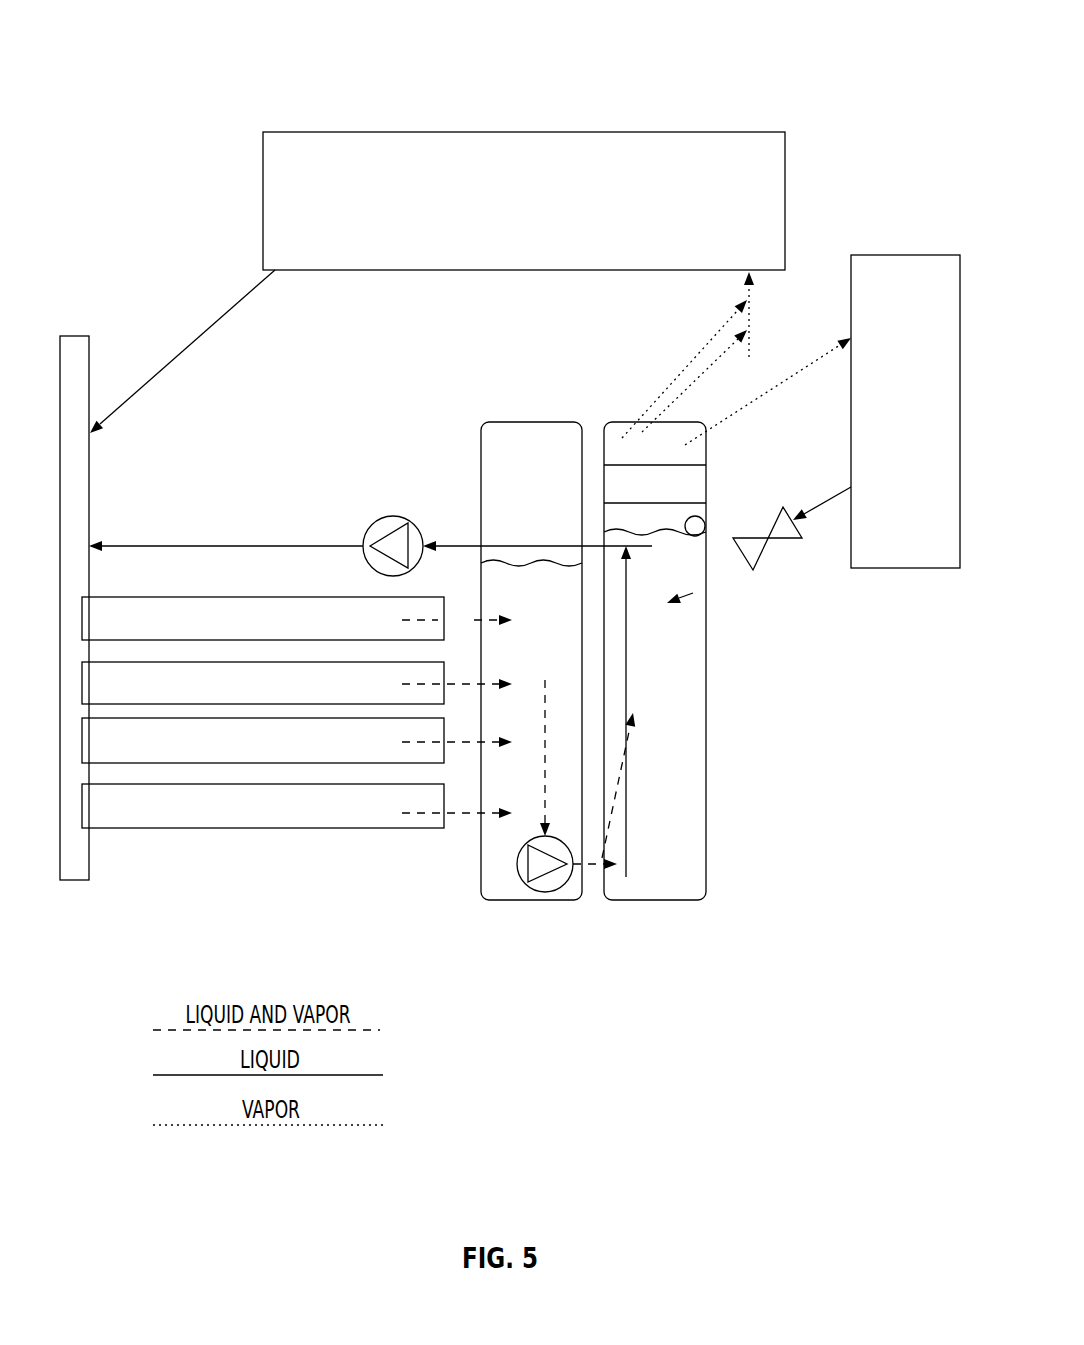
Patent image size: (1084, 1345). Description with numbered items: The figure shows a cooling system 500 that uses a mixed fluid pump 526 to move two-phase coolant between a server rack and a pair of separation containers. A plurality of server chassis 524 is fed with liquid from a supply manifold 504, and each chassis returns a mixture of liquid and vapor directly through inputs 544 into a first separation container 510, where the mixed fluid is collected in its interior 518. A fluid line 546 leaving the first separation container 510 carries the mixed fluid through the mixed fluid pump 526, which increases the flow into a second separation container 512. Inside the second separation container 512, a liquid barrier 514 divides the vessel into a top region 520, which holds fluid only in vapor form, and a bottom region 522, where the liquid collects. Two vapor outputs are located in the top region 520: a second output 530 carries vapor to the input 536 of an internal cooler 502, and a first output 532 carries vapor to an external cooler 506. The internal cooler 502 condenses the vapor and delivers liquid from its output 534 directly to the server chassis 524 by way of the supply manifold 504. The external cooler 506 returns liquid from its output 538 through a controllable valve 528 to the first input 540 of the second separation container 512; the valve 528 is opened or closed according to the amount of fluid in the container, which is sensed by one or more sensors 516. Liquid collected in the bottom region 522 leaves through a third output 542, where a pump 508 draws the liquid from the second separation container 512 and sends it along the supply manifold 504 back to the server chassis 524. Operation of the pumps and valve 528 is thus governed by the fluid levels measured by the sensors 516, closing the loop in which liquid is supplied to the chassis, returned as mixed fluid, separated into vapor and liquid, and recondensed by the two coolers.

The cooling system 500 is at (745, 74).
The internal cooler 502 is at (623, 214).
The supply manifold 504 is at (57, 317).
The external cooler 506 is at (889, 456).
The pump 508 is at (394, 517).
The first separation container 510 is at (516, 942).
The second separation container 512 is at (639, 942).
The liquid barrier 514 is at (639, 500).
The sensors 516 is at (704, 521).
The interior of the first separation container 518 is at (481, 468).
The top region 520 is at (638, 445).
The bottom region 522 is at (698, 726).
The server chassis 524 is at (317, 893).
The mixed fluid pump 526 is at (515, 880).
The controllable valve 528 is at (751, 612).
The second output 530 is at (669, 380).
The first output 532 is at (751, 405).
The output of the internal cooler 534 is at (195, 334).
The input of the internal cooler 536 is at (742, 296).
The output of the external cooler 538 is at (844, 493).
The first input 540 is at (740, 558).
The third output 542 is at (519, 561).
The inputs 544 is at (439, 637).
The fluid line 546 is at (529, 778).